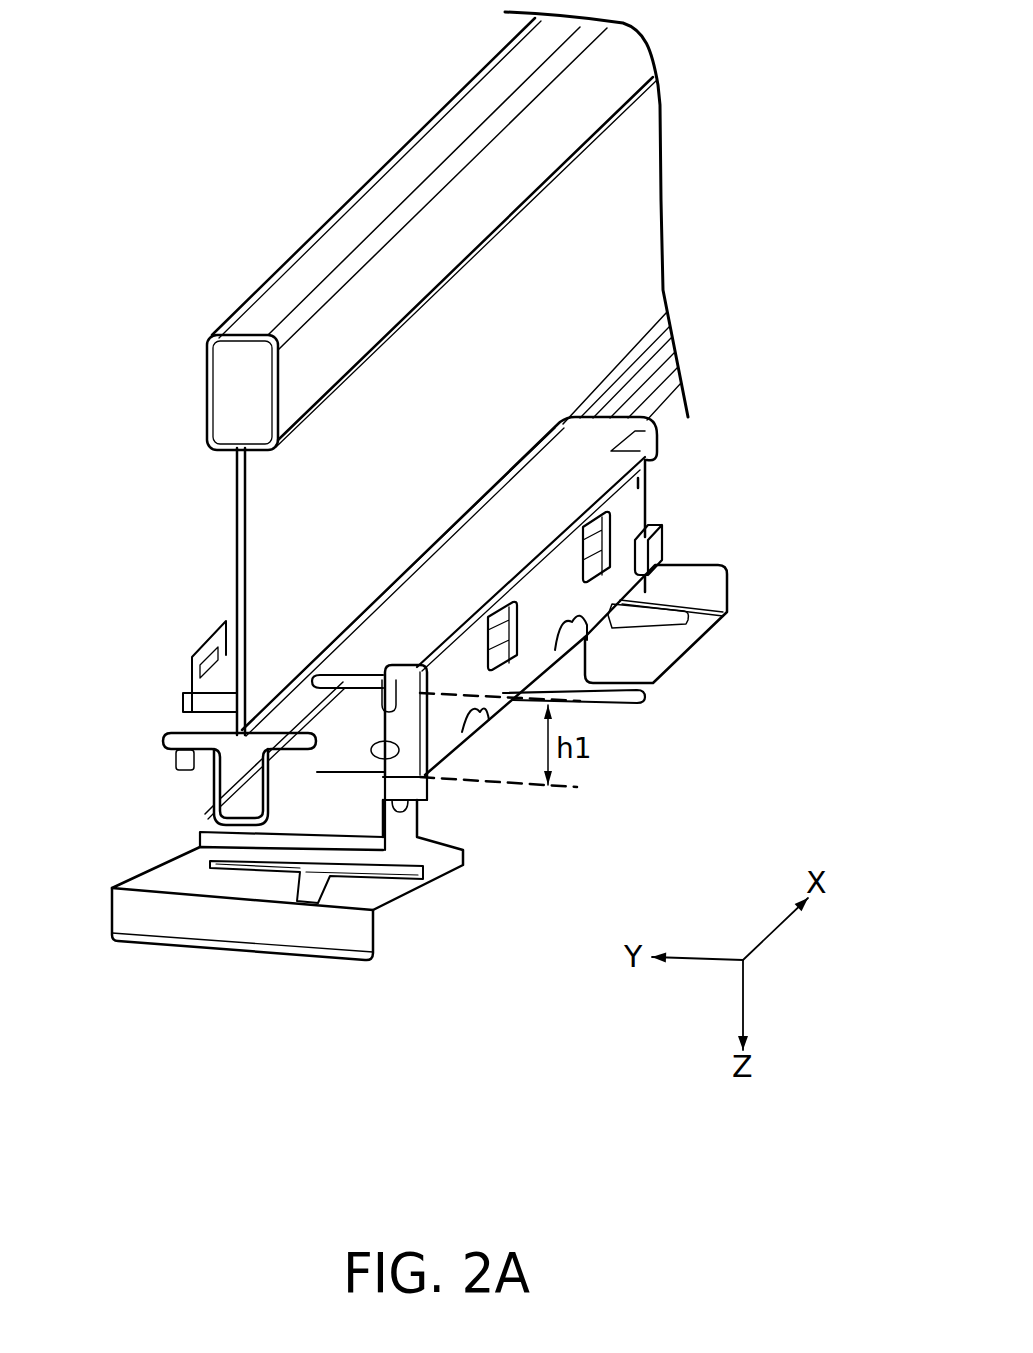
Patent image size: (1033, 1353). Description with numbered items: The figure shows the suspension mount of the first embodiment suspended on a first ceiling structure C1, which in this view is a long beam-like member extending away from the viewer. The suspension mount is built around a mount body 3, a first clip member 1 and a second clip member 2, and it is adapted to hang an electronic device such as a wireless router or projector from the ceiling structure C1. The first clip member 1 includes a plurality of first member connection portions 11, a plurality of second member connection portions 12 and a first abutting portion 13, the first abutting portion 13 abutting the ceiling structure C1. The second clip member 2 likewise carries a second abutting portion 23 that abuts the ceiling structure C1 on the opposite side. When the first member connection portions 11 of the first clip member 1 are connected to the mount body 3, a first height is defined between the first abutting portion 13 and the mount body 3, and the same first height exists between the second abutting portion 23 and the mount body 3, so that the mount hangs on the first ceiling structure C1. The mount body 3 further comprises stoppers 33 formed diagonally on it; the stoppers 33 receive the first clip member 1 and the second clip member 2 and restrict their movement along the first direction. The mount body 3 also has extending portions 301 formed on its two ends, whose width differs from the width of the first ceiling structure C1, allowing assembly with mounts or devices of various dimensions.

The first ceiling structure C1 is at (310, 267).
The first clip member 1 is at (665, 494).
The first member connection portions 11 is at (462, 723).
The second member connection portions 12 is at (612, 545).
The first abutting portion 13 is at (557, 473).
The second clip member 2 is at (196, 630).
The second abutting portion 23 is at (228, 637).
The mount body 3 is at (130, 983).
The extending portions 301 is at (385, 910).
The stoppers 33 is at (657, 540).